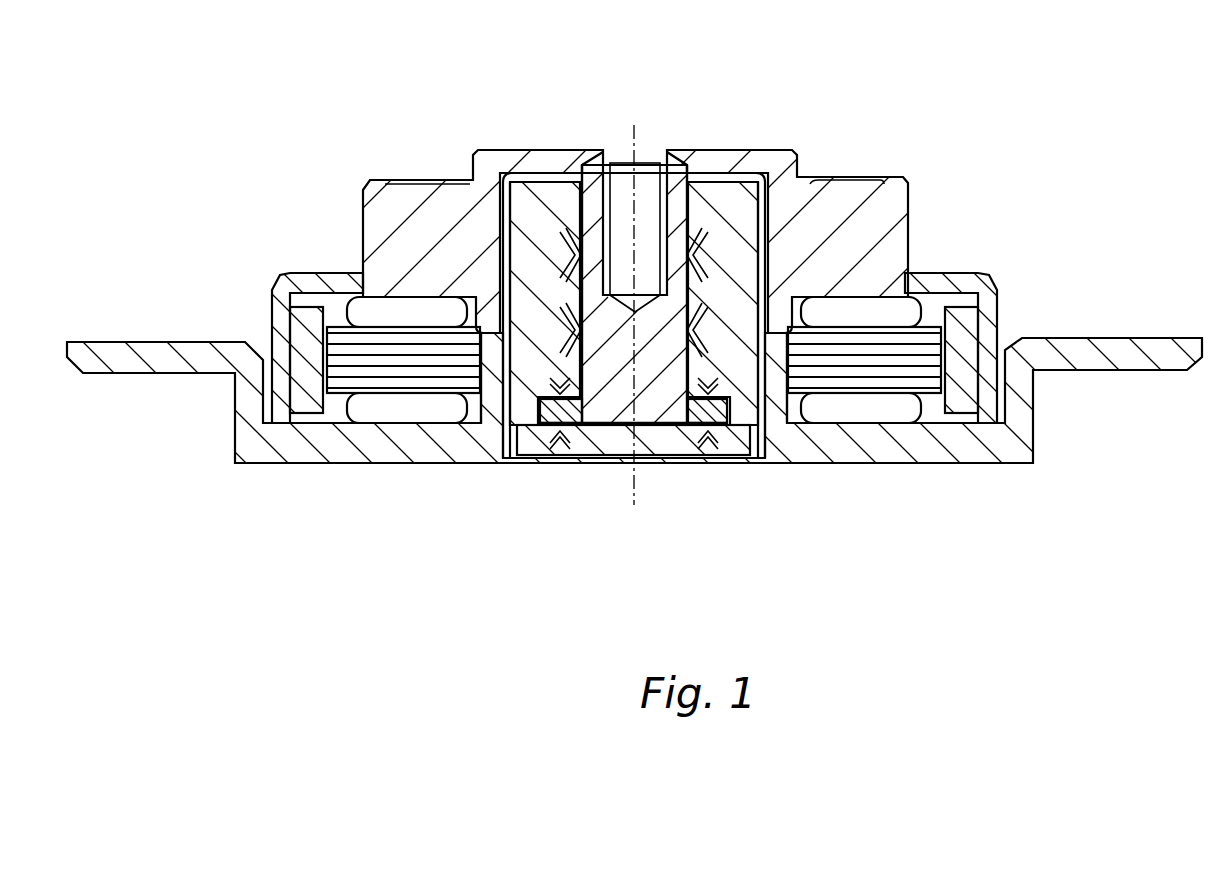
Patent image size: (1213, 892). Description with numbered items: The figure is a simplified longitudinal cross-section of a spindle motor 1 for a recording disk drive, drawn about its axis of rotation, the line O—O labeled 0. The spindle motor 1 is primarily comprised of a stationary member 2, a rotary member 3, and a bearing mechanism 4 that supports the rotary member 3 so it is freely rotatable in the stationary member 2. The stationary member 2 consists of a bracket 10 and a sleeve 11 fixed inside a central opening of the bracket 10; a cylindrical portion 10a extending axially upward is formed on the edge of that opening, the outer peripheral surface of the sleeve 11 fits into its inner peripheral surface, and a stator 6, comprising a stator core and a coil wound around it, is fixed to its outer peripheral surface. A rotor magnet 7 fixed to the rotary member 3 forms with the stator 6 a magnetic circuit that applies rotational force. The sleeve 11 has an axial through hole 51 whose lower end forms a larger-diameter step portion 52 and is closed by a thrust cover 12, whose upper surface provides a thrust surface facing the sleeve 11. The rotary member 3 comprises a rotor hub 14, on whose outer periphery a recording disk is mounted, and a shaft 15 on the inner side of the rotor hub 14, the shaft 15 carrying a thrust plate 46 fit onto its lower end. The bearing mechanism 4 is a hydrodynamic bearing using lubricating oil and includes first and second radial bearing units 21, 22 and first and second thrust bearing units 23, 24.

The spindle motor 1 is at (697, 102).
The stationary member 2 is at (656, 338).
The rotary member 3 is at (590, 150).
The bearing mechanism 4 is at (500, 318).
The stator 6 is at (873, 313).
The rotor magnet 7 is at (992, 334).
The bracket 10 is at (962, 450).
The cylindrical portion 10a is at (775, 350).
The sleeve 11 is at (735, 210).
The thrust cover 12 is at (608, 445).
The rotor hub 14 is at (847, 207).
The shaft 15 is at (550, 357).
The first radial bearing unit 21 is at (677, 207).
The second radial bearing unit 22 is at (678, 323).
The first thrust bearing unit 23 is at (735, 390).
The second thrust bearing unit 24 is at (700, 430).
The thrust plate 46 is at (545, 440).
The through hole 51 is at (690, 200).
The step portion 52 is at (565, 440).
The axis of rotation 0 is at (636, 312).